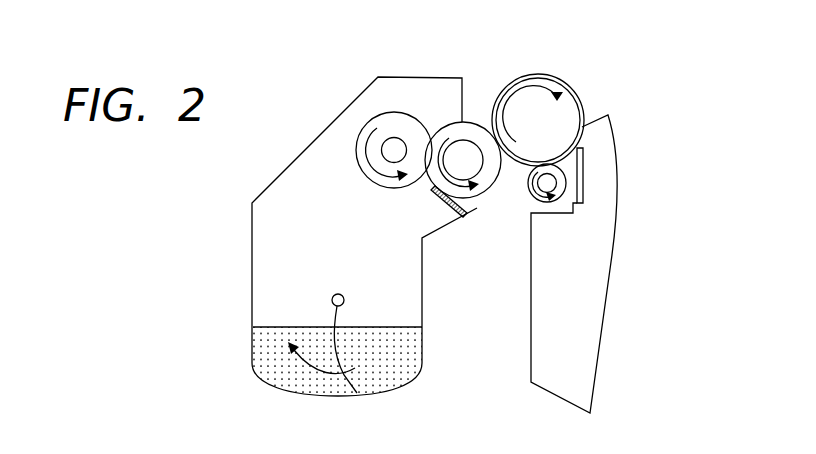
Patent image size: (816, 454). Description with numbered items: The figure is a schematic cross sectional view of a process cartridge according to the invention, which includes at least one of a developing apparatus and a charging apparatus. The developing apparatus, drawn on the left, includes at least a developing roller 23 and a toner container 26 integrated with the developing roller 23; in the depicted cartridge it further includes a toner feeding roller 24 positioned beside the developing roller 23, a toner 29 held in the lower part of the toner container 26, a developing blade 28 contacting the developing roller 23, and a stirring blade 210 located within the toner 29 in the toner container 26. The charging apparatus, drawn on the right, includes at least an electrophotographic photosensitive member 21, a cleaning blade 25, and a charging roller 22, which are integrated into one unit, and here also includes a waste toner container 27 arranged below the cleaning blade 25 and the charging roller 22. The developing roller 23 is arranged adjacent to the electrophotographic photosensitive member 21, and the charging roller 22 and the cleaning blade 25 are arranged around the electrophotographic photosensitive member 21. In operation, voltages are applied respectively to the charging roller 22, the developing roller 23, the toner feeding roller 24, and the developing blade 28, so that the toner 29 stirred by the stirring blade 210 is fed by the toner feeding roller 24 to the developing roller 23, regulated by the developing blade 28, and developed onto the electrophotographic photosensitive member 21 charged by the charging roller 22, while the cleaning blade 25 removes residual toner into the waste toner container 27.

The electrophotographic photosensitive member 21 is at (571, 88).
The charging roller 22 is at (529, 175).
The developing roller 23 is at (482, 123).
The toner feeding roller 24 is at (385, 114).
The cleaning blade 25 is at (584, 169).
The toner container 26 is at (296, 110).
The waste toner container 27 is at (621, 294).
The developing blade 28 is at (446, 207).
The toner 29 is at (306, 331).
The stirring blade 210 is at (344, 310).